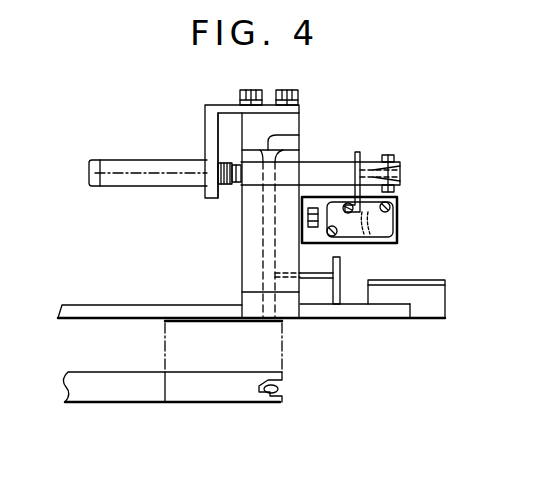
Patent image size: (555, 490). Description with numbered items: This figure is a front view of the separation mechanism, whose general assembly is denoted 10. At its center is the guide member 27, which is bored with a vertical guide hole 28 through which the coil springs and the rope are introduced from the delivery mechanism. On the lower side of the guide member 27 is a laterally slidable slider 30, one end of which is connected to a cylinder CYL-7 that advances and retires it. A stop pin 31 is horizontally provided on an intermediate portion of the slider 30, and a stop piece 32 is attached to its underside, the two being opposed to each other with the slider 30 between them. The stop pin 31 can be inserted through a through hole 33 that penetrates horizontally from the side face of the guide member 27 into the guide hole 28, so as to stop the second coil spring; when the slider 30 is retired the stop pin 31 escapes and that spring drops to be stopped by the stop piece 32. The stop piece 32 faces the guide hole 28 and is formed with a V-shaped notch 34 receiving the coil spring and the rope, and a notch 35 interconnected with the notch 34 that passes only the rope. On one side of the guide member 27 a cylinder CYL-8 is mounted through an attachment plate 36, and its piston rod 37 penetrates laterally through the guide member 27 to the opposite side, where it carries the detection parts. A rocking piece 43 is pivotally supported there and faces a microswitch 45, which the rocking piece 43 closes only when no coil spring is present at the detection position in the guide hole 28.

The mounting block 10 is at (301, 116).
The guide member 27 is at (250, 244).
The guide hole 28 is at (262, 268).
The slider 30 is at (382, 316).
The stop pin 31 is at (327, 272).
The stop piece 32 is at (187, 323).
The through hole 33 is at (275, 290).
The V-shaped notch 34 is at (282, 386).
The notch 35 is at (271, 401).
The attachment plate 36 is at (205, 139).
The piston rod 37 is at (235, 186).
The rocking piece 43 is at (398, 167).
The microswitch 45 is at (398, 228).
The cylinder CYL-7 is at (503, 367).
The cylinder CYL-8 is at (162, 164).